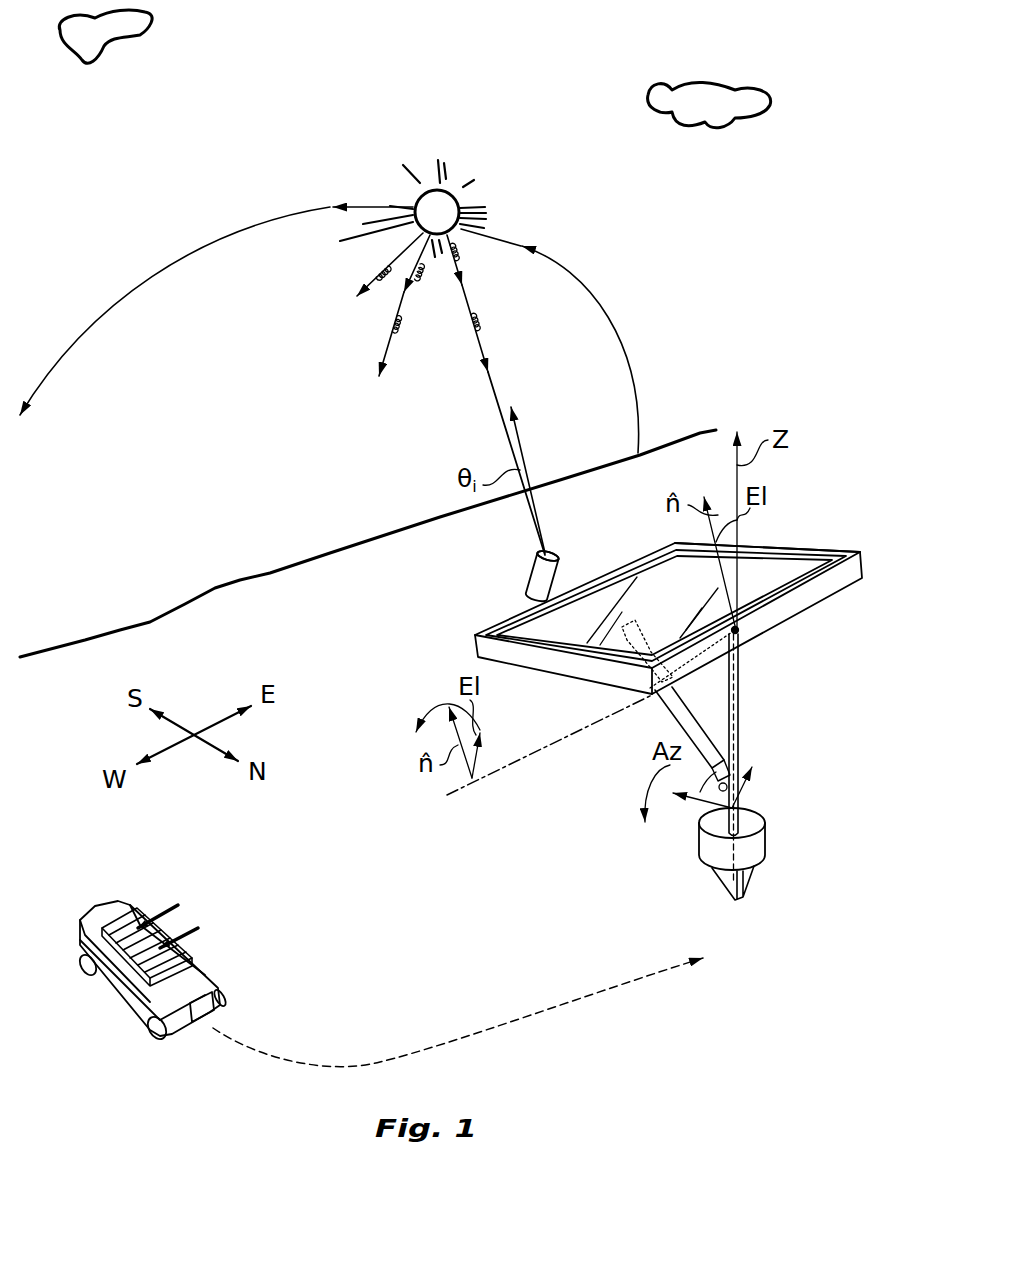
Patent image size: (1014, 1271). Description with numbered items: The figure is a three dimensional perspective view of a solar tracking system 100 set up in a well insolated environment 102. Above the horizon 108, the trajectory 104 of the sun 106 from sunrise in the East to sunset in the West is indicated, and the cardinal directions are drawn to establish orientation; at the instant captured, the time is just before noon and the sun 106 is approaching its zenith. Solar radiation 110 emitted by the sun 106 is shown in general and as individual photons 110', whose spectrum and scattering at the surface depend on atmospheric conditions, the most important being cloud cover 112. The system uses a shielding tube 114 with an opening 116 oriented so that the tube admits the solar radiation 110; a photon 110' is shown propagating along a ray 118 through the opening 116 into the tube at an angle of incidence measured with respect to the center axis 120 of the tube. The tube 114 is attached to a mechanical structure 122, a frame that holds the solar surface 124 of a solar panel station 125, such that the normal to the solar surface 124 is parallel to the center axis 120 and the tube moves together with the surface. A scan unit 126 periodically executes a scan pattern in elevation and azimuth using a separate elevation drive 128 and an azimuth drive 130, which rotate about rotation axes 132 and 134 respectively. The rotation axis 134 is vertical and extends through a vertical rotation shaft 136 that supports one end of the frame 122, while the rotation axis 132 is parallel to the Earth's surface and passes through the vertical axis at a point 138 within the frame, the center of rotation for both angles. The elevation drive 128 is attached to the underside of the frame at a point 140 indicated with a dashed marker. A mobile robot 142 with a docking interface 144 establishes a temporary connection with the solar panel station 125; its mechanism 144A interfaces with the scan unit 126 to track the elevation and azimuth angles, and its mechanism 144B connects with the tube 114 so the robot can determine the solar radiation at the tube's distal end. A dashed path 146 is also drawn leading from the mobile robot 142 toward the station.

The solar tracking system 100 is at (781, 298).
The environment 102 is at (299, 110).
The trajectory 104 is at (147, 280).
The sun 106 is at (465, 203).
The horizon 108 is at (272, 570).
The solar radiation 110 is at (326, 319).
The photon 110' is at (511, 303).
The cloud cover 112 is at (148, 27).
The shielding tube 114 is at (545, 592).
The opening 116 is at (556, 553).
The ray 118 is at (492, 393).
The center axis 120 is at (518, 443).
The mechanical structure 122 is at (823, 597).
The solar surface 124 is at (795, 550).
The solar panel station 125 is at (352, 627).
The scan unit 126 is at (533, 872).
The elevation drive 128 is at (663, 703).
The azimuth drive 130 is at (766, 845).
The rotation axis 132 is at (492, 773).
The rotation axis 134 is at (712, 870).
The vertical rotation shaft 136 is at (742, 688).
The point 138 is at (742, 633).
The point 140 is at (625, 628).
The mobile robot 142 is at (97, 912).
The docking interface 144 is at (192, 955).
The mechanism 144A is at (198, 928).
The mechanism 144B is at (180, 905).
The vehicle path 146 is at (550, 1015).